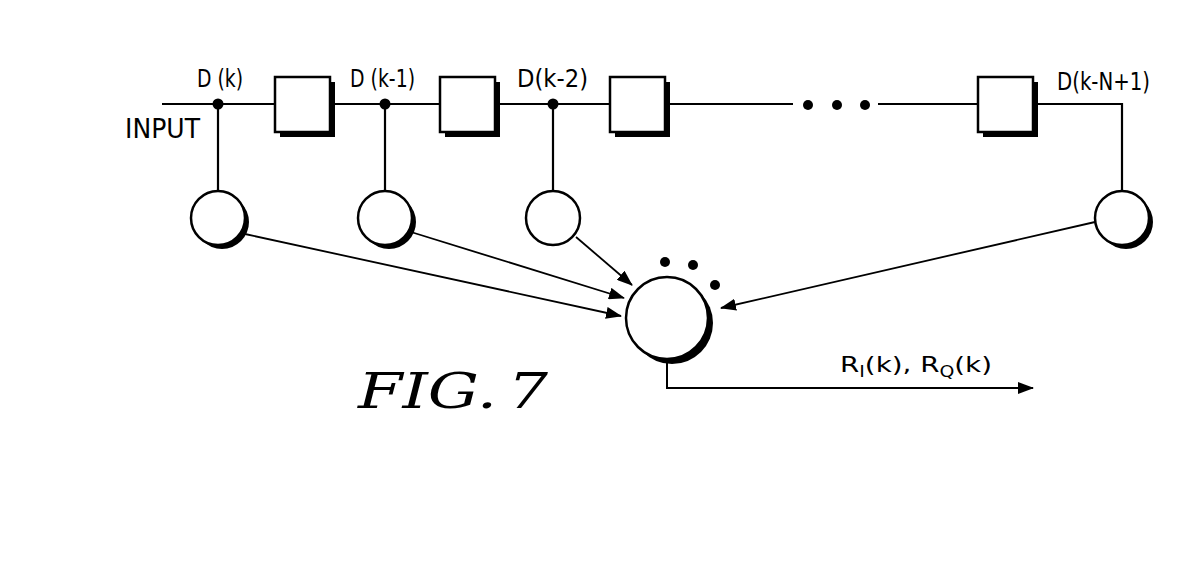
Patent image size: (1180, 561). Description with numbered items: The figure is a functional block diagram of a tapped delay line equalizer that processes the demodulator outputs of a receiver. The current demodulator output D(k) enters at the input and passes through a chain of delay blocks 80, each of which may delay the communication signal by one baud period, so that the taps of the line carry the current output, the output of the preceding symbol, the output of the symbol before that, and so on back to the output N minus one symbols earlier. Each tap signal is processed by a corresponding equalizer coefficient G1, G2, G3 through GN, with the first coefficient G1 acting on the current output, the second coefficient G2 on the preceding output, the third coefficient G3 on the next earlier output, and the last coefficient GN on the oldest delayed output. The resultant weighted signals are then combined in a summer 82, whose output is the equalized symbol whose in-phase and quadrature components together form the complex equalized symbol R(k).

The delay blocks 80 is at (316, 77).
The summer 82 is at (624, 331).
The equalizer coefficient G1 is at (406, 253).
The equalizer coefficient G2 is at (491, 244).
The equalizer coefficient G3 is at (579, 238).
The equalizer coefficient GN is at (937, 249).